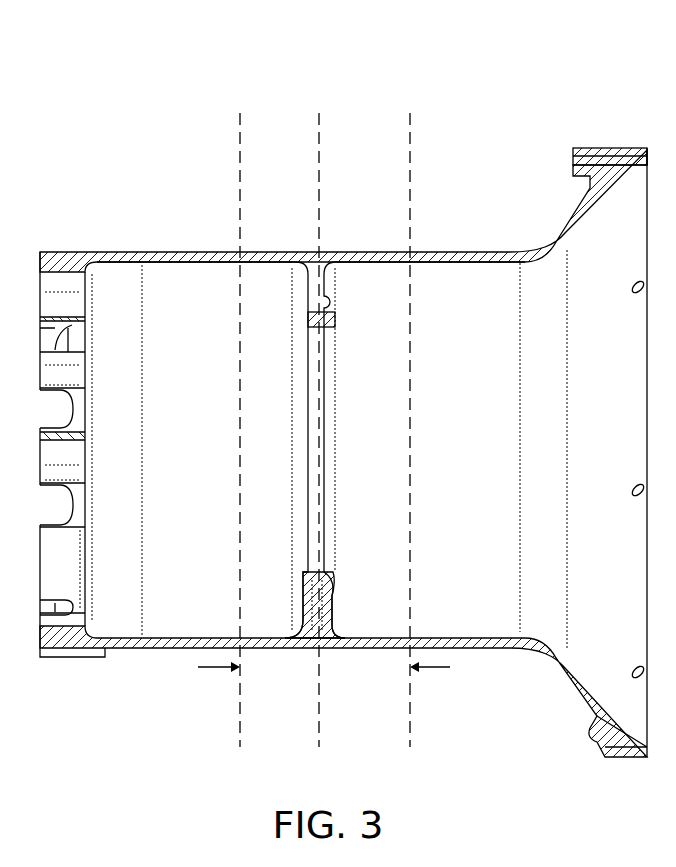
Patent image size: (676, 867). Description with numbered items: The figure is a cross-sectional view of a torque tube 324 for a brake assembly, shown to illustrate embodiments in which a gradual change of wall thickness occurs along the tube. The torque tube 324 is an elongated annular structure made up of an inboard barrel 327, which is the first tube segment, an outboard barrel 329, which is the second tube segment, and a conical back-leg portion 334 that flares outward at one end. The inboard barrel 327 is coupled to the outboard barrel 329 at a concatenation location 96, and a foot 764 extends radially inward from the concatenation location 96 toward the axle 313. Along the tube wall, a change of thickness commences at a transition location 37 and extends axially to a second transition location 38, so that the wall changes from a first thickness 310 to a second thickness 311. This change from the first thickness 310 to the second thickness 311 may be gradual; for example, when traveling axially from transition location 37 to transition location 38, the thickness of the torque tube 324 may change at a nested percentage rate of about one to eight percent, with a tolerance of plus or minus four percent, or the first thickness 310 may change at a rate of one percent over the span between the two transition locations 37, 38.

The torque tube 324 is at (207, 86).
The first thickness 310 is at (202, 300).
The second thickness 311 is at (394, 300).
The inboard barrel 327 is at (152, 249).
The outboard barrel 329 is at (428, 248).
The conical back-leg portion 334 is at (580, 215).
The axle 313 is at (305, 412).
The foot 764 is at (303, 312).
The transition location 37 is at (240, 703).
The concatenation location 96 is at (318, 697).
The transition location 38 is at (408, 693).